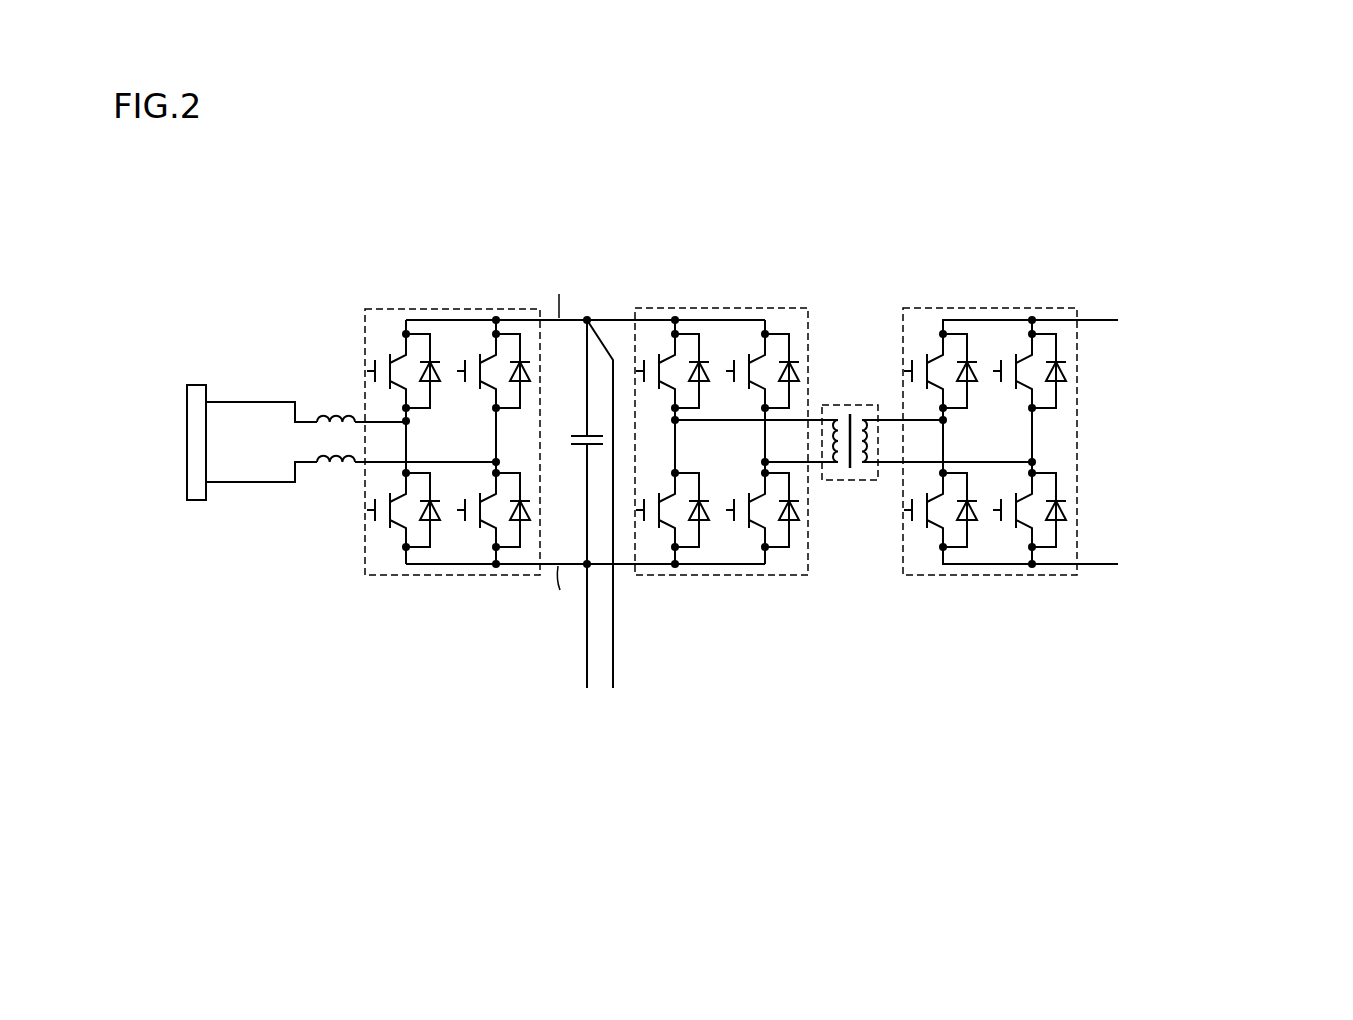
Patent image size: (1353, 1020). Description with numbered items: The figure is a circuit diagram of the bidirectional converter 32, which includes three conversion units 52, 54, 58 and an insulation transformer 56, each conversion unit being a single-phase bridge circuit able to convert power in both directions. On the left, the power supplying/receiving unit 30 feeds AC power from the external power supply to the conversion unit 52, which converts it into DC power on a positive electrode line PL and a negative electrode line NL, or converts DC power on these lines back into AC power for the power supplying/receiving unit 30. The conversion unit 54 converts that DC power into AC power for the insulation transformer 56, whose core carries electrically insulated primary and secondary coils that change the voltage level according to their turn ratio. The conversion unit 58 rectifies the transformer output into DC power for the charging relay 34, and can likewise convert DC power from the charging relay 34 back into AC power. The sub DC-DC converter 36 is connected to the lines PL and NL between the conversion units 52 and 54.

The power supplying/receiving unit 30 is at (199, 385).
The bidirectional converter 32 is at (214, 212).
The charging relay 34 is at (1130, 566).
The sub DC-DC converter 36 is at (622, 695).
The conversion unit 52 is at (451, 308).
The conversion unit 54 is at (730, 308).
The insulation transformer 56 is at (850, 405).
The conversion unit 58 is at (1000, 308).